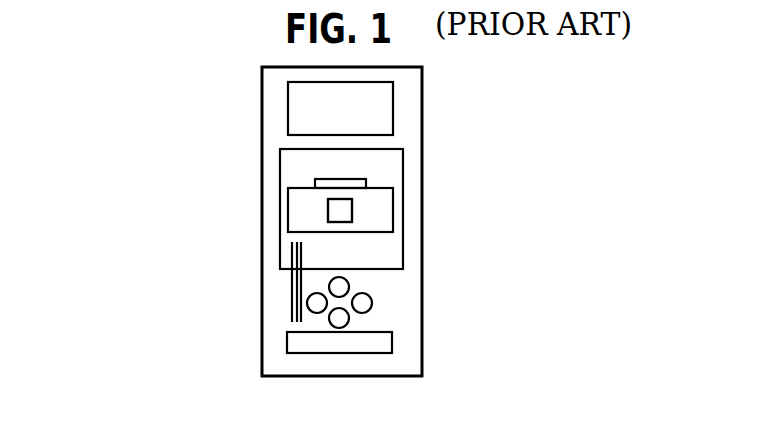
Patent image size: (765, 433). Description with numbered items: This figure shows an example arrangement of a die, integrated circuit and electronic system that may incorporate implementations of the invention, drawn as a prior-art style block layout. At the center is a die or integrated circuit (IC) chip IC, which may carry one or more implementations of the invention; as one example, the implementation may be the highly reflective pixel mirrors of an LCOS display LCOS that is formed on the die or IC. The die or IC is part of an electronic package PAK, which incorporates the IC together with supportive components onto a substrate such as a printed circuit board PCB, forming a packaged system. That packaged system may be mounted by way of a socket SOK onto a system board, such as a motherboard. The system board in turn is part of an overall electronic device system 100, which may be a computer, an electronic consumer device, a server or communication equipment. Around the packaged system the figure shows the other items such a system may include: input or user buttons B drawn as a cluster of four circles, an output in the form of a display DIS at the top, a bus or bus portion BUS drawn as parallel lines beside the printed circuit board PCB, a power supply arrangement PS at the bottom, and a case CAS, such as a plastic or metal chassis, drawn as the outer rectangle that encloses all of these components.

The electronic device system 100 is at (194, 143).
The case CAS is at (422, 138).
The display DIS is at (393, 110).
The printed circuit board PCB is at (403, 268).
The socket SOK is at (366, 181).
The electronic package PAK is at (393, 229).
The integrated circuit chip IC is at (352, 211).
The LCOS display LCOS is at (328, 212).
The bus BUS is at (292, 312).
The input buttons B is at (372, 303).
The power supply arrangement PS is at (392, 345).